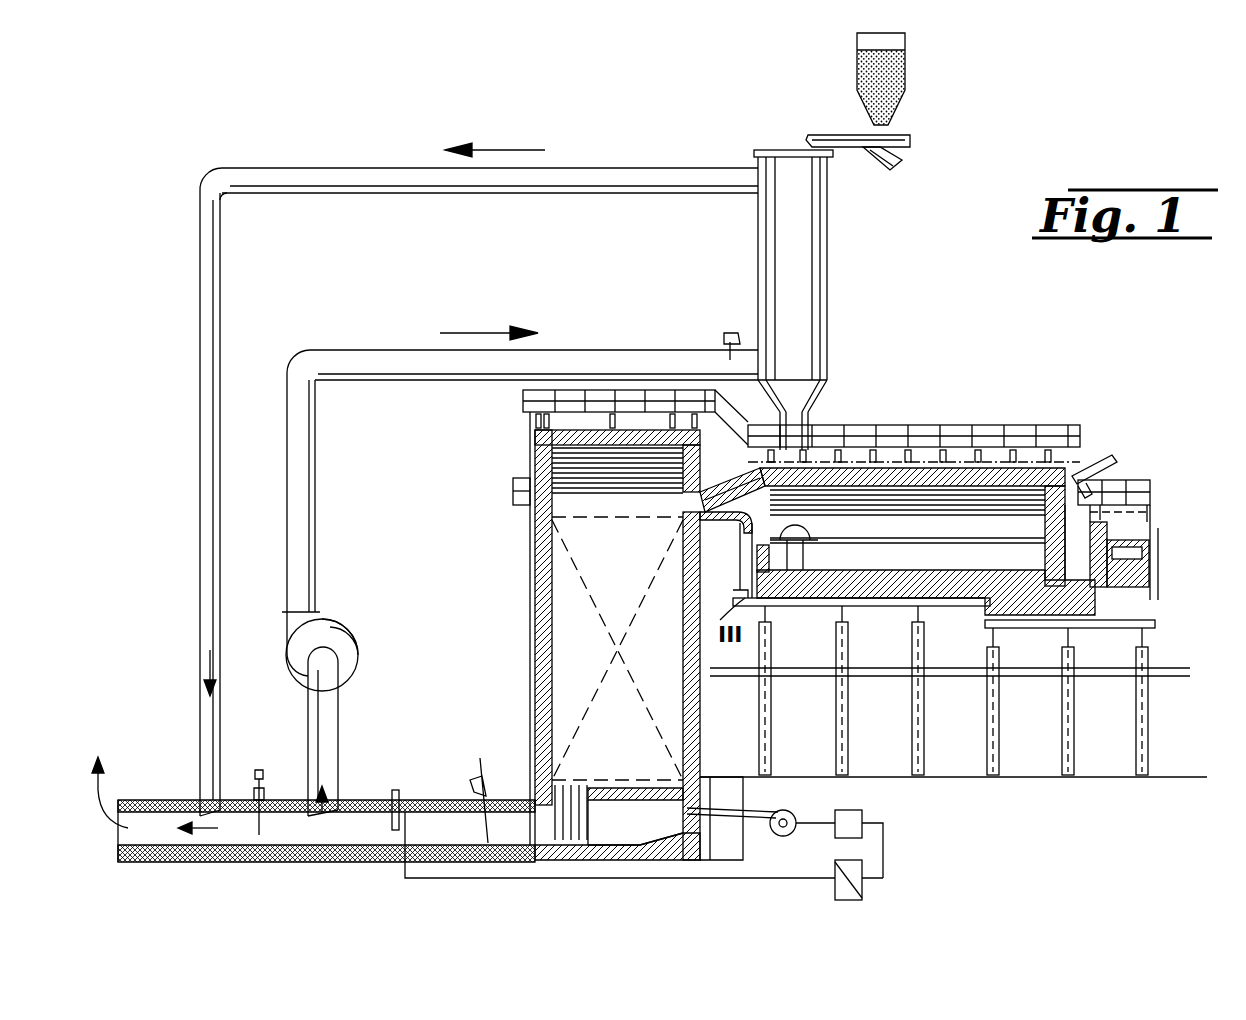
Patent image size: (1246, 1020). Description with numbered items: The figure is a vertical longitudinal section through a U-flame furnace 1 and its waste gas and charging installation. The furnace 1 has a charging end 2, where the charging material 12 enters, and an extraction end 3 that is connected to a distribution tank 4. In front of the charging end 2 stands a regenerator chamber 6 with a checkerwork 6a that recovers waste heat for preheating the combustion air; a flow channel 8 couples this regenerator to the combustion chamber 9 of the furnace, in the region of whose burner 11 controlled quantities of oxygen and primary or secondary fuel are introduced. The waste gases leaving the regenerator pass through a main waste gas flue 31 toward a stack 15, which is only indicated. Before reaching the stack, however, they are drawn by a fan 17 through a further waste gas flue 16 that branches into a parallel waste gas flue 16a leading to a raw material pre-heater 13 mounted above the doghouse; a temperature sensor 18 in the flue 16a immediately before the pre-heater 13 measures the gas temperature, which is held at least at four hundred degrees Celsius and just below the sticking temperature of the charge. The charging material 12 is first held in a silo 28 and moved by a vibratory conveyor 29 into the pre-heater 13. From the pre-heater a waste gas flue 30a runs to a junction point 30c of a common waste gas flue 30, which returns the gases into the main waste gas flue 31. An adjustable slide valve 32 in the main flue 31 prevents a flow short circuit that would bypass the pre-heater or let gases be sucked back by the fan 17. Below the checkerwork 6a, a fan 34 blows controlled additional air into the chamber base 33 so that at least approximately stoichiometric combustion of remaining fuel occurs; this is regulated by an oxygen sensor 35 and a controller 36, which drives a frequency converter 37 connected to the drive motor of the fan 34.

The furnace 1 is at (953, 378).
The charging end 2 is at (783, 615).
The extraction end 3 is at (1114, 440).
The distribution tank 4 is at (1155, 538).
The regenerator chamber 6 is at (530, 633).
The checkerwork 6a is at (630, 729).
The flow channel 8 is at (712, 496).
The combustion chamber 9 is at (1002, 495).
The burner 11 is at (738, 538).
The charging material 12 is at (900, 80).
The raw material pre-heater 13 is at (828, 273).
The stack 15 is at (96, 792).
The waste gas flue 16 is at (316, 458).
The parallel waste gas flue 16a is at (573, 356).
The fan 17 is at (332, 638).
The temperature sensor 18 is at (726, 342).
The silo 28 is at (907, 43).
The vibratory conveyor 29 is at (905, 141).
The common waste gas flue 30 is at (200, 480).
The waste gas flue 30a is at (578, 172).
The junction point 30c is at (204, 170).
The main waste gas flue 31 is at (286, 832).
The damper 32 is at (266, 788).
The chamber base 33 is at (628, 835).
The fan 34 is at (790, 814).
The oxygen sensor 35 is at (392, 788).
The controller 36 is at (862, 890).
The frequency converter 37 is at (857, 818).